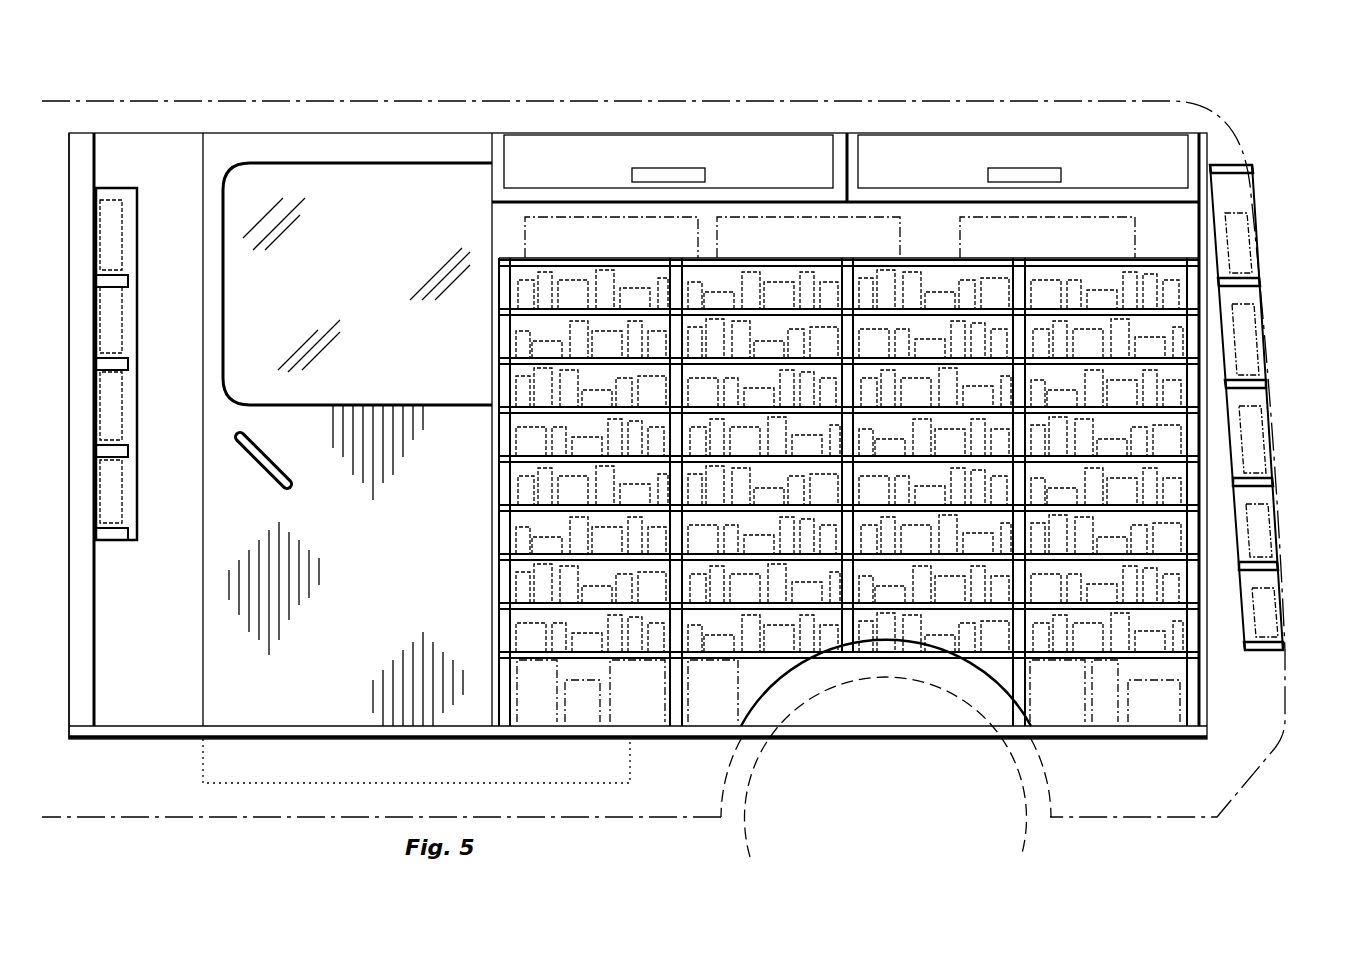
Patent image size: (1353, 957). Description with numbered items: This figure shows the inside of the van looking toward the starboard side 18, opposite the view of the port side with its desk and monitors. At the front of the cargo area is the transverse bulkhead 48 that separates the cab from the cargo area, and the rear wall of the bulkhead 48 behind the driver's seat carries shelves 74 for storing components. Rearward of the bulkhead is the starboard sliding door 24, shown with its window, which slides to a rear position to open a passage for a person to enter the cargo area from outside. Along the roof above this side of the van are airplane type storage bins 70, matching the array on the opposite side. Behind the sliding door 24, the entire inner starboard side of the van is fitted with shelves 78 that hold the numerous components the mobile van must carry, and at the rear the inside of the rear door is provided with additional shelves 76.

The starboard side 18 is at (1273, 407).
The starboard sliding door 24 is at (399, 150).
The bulkhead 48 is at (82, 425).
The storage bins 70 is at (765, 155).
The shelves 74 is at (123, 272).
The shelves 76 is at (1264, 386).
The shelves 78 is at (1150, 603).